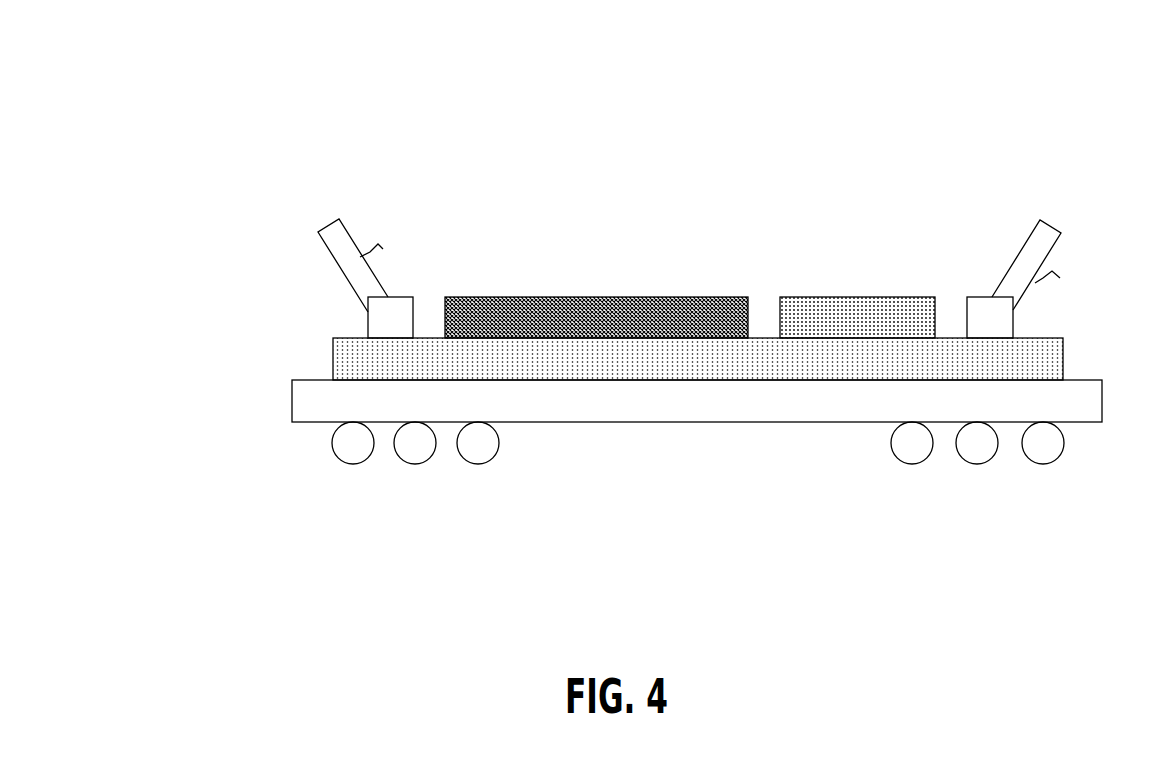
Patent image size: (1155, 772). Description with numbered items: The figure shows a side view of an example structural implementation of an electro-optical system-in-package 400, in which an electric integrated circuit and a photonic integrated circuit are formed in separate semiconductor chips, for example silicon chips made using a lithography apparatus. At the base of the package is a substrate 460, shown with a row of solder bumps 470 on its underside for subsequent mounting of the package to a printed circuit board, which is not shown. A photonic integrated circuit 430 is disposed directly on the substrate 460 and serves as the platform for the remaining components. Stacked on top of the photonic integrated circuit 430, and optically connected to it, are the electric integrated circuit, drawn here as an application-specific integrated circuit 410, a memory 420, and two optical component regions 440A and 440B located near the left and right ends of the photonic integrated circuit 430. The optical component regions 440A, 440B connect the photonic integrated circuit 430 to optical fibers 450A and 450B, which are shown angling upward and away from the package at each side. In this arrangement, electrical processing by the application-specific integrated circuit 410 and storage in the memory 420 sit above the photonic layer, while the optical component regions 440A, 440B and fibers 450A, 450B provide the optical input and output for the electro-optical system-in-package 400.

The electro-optical system-in-package 400 is at (620, 309).
The application-specific integrated circuit 410 is at (538, 297).
The memory 420 is at (842, 297).
The photonic integrated circuit 430 is at (773, 369).
The optical component region 440A is at (392, 316).
The optical component region 440B is at (990, 317).
The optical fiber 450A is at (383, 261).
The optical fiber 450B is at (1066, 265).
The substrate 460 is at (697, 401).
The solder bumps 470 is at (888, 450).